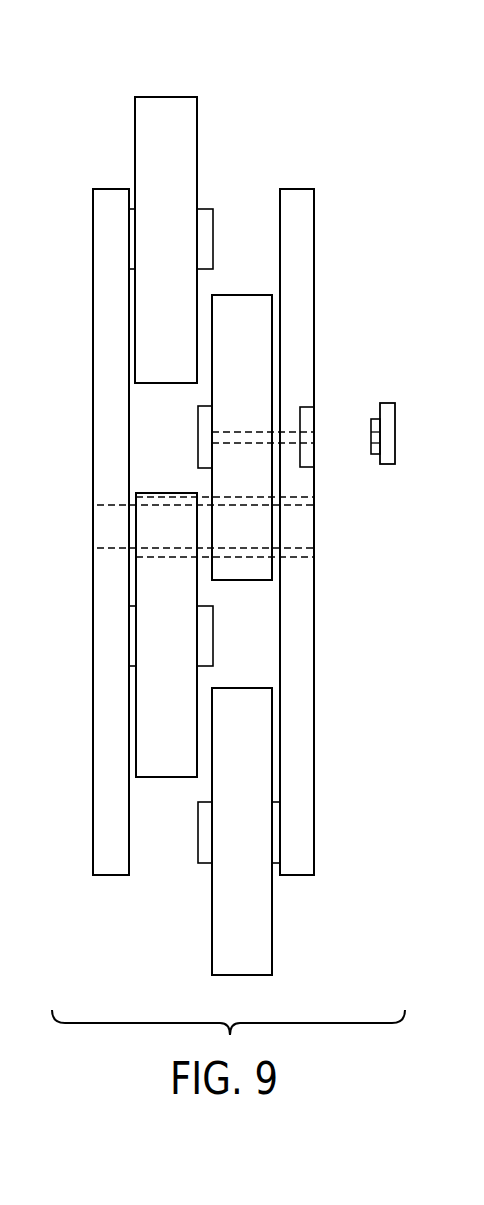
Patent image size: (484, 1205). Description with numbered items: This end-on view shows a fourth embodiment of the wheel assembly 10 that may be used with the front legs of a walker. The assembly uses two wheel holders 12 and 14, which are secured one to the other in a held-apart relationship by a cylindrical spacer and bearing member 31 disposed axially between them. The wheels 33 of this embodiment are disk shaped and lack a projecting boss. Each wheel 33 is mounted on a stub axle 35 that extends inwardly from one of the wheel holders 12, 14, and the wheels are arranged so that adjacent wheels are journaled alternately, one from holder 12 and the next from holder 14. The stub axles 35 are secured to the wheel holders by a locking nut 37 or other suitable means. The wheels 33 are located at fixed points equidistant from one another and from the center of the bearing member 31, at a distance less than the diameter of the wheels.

The wheel assembly 10 is at (258, 110).
The wheel holder 12 is at (298, 240).
The wheel holder 14 is at (108, 333).
The cylindrical spacer and bearing member 31 is at (203, 558).
The wheel 33 is at (150, 145).
The stub axle 35 is at (205, 240).
The locking nut 37 is at (377, 420).